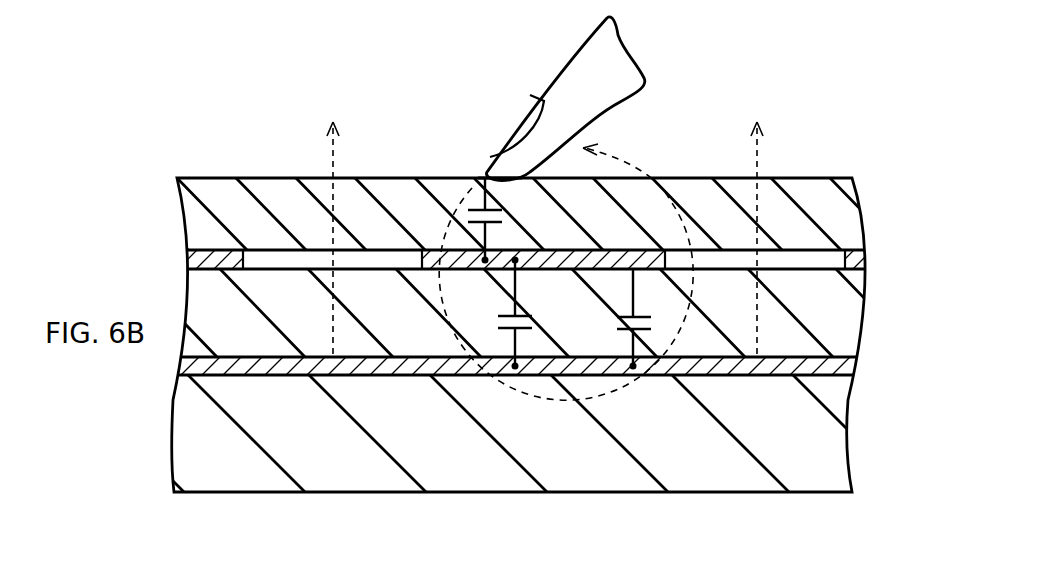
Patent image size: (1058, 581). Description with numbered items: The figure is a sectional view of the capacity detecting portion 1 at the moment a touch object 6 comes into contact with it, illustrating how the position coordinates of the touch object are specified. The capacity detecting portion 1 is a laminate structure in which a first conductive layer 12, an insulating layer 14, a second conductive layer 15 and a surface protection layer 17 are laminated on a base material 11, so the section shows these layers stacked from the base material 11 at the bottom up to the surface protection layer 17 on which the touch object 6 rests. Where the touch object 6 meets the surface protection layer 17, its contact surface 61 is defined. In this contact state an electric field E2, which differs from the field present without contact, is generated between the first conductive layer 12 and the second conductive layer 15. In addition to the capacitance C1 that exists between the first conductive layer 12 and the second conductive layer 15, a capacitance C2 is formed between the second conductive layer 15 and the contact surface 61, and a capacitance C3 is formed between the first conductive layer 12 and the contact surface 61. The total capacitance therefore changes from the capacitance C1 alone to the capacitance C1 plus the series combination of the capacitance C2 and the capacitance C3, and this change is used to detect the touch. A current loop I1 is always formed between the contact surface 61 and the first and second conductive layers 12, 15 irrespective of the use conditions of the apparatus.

The capacity detecting portion 1 is at (842, 136).
The touch object 6 is at (660, 122).
The contact surface 61 is at (487, 178).
The base material 11 is at (822, 432).
The first conductive layer 12 is at (850, 364).
The insulating layer 14 is at (842, 318).
The second conductive layer 15 is at (858, 262).
The surface protection layer 17 is at (842, 221).
The electric field E2 is at (336, 148).
The capacitance C1 is at (505, 329).
The capacitance C2 is at (475, 223).
The capacitance C3 is at (622, 330).
The current loop I1 is at (563, 397).